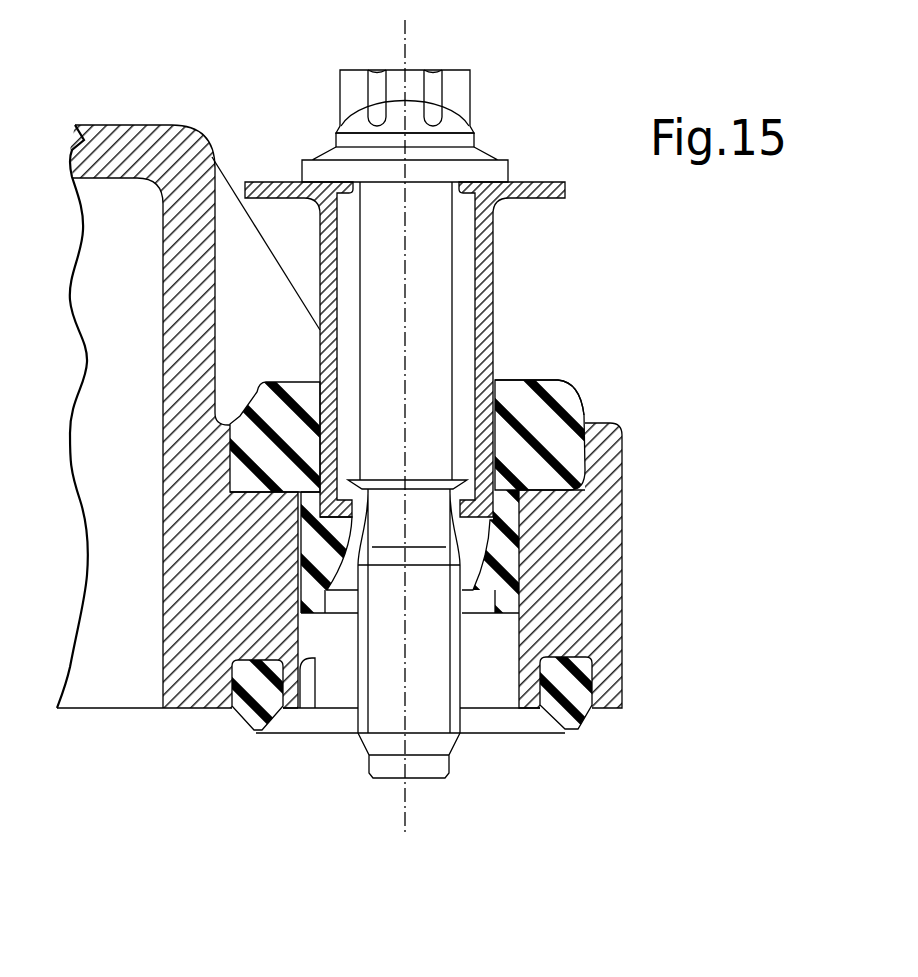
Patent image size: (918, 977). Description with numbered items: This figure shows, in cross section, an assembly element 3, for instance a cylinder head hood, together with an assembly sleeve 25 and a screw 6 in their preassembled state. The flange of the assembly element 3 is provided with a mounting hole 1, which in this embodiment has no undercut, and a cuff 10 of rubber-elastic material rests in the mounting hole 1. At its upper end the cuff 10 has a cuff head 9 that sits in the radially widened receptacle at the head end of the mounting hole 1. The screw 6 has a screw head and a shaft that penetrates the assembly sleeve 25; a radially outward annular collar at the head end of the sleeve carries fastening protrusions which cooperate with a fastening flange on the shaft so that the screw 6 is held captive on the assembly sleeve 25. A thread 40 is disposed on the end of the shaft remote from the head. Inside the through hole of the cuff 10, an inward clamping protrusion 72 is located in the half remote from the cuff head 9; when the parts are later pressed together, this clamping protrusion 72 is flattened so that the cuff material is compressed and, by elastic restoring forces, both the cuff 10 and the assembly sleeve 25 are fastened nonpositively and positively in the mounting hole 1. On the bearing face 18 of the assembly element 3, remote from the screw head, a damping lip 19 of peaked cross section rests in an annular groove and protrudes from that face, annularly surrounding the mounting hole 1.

The mounting hole 1 is at (315, 660).
The assembly element 3 is at (585, 596).
The screw 6 is at (456, 86).
The cuff head 9 is at (568, 377).
The cuff 10 is at (579, 408).
The bearing face 18 is at (207, 710).
The damping lip 19 is at (580, 717).
The assembly sleeve 25 is at (495, 242).
The thread 40 is at (460, 666).
The clamping protrusion 72 is at (472, 533).